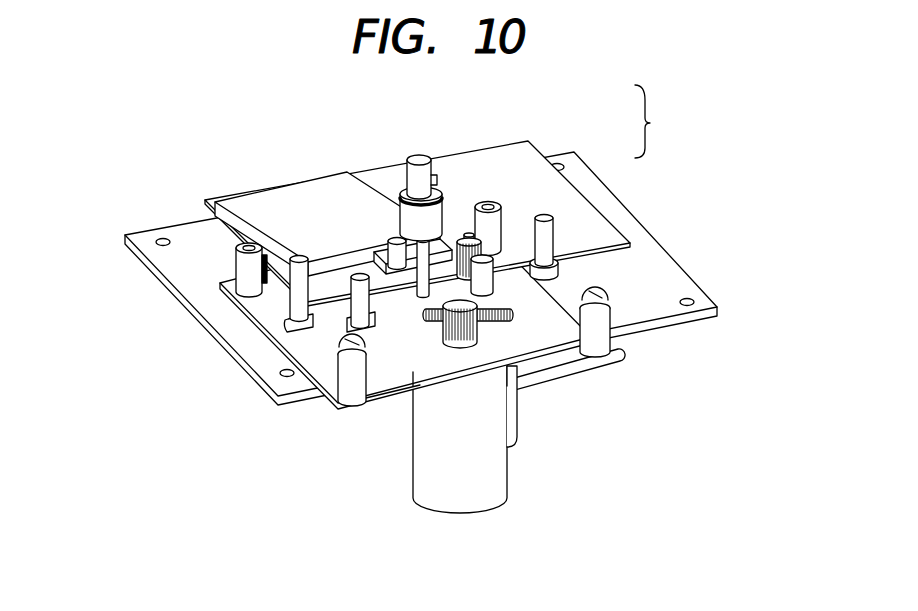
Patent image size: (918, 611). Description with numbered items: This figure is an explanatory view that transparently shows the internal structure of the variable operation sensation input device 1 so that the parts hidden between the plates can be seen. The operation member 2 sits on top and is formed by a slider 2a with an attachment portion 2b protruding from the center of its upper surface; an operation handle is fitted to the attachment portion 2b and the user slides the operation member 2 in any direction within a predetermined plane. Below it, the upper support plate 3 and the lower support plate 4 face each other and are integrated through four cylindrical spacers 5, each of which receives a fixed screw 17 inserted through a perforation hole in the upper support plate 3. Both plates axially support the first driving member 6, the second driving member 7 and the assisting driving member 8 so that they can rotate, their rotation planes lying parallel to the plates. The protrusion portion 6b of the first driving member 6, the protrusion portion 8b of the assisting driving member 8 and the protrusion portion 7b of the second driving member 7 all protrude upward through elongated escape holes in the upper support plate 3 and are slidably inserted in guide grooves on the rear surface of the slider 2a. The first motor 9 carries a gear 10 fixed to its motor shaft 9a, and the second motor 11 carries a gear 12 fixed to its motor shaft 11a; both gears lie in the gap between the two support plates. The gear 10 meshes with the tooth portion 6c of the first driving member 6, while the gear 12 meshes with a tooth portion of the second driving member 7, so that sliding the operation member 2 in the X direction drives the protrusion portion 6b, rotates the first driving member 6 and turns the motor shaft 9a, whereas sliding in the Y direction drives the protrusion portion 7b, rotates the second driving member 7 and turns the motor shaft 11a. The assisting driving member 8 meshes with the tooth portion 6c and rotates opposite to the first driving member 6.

The variable operation sensation input device 1 is at (130, 272).
The operation member 2 is at (668, 136).
The slider 2a is at (523, 155).
The attachment portion 2b is at (419, 156).
The upper support plate 3 is at (687, 278).
The lower support plate 4 is at (447, 387).
The cylindrical spacer 5 is at (320, 398).
The first driving member 6 is at (600, 343).
The protrusion portion 6b is at (549, 238).
The tooth portion 6c is at (440, 318).
The second driving member 7 is at (298, 258).
The protrusion portion 7b is at (380, 255).
The assisting driving member 8 is at (297, 315).
The protrusion portion 8b is at (243, 197).
The first motor 9 is at (503, 467).
The motor shaft 9a is at (397, 390).
The gear 10 is at (477, 343).
The second motor 11 is at (515, 412).
The motor shaft 11a is at (417, 237).
The gear 12 is at (500, 227).
The fixed screw 17 is at (338, 338).